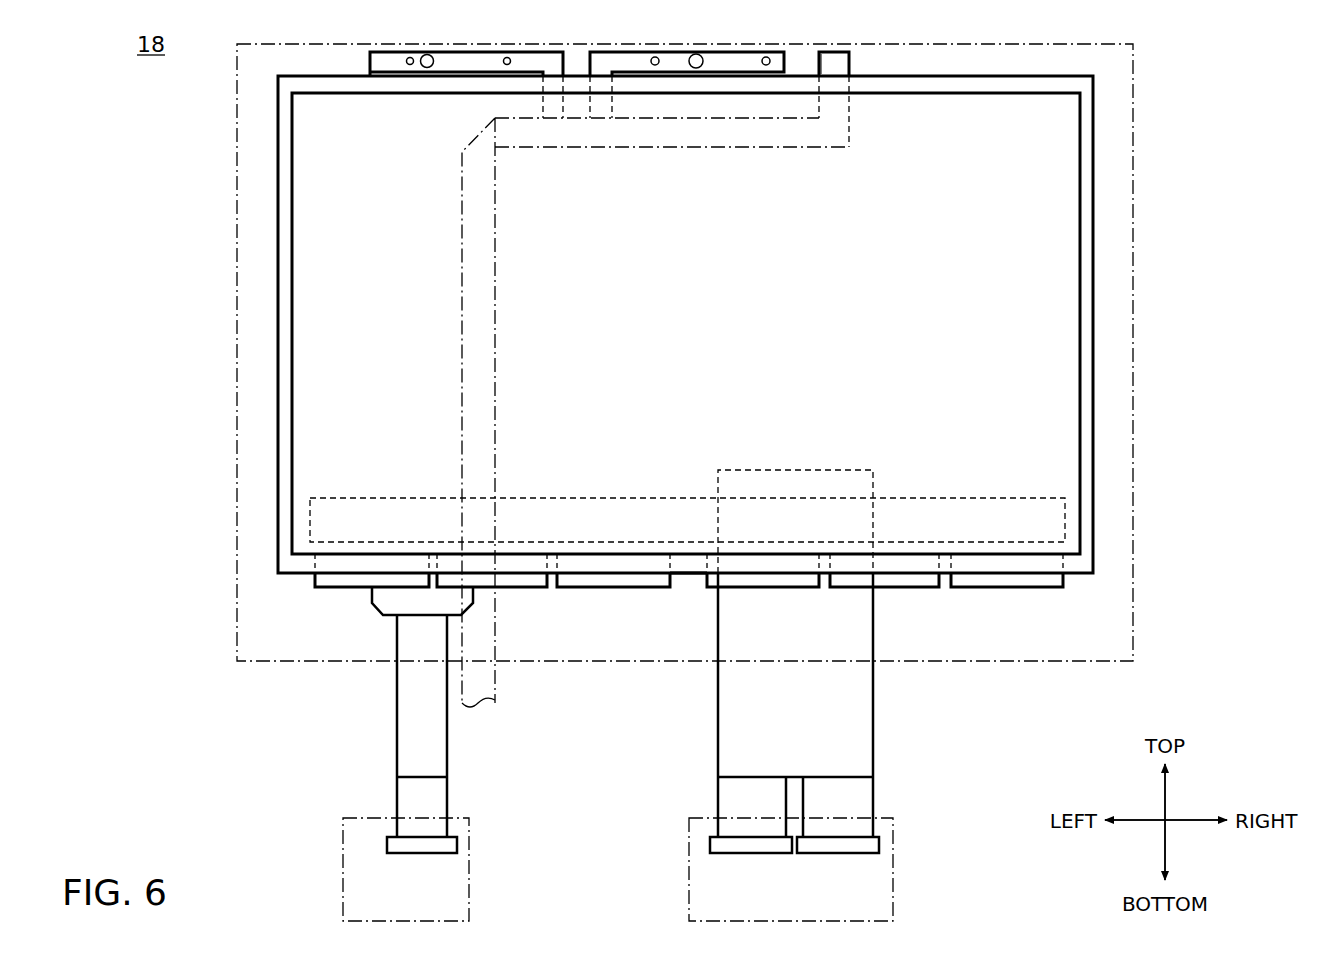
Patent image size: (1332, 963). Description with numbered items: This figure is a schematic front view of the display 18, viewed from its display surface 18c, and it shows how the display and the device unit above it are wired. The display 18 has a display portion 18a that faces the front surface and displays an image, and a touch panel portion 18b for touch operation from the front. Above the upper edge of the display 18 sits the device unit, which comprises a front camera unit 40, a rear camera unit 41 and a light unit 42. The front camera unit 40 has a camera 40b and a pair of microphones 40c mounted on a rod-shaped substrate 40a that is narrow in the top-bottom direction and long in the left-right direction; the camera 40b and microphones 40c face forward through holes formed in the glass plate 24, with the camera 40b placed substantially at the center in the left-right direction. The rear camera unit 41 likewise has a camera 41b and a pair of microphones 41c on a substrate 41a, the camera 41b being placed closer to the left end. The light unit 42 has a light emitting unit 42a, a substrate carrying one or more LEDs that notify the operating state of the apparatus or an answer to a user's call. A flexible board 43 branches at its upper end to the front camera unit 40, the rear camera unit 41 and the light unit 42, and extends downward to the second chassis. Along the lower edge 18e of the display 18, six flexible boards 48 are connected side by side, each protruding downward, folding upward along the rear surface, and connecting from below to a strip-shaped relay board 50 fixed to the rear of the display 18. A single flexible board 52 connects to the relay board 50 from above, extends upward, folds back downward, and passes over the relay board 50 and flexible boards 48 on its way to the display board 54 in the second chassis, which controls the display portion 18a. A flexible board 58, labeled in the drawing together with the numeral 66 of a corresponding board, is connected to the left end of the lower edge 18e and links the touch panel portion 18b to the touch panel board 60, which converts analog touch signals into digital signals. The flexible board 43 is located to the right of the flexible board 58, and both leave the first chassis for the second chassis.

The display 18 is at (748, 400).
The display portion 18a is at (748, 324).
The touch panel portion 18b is at (1095, 413).
The display surface 18c is at (1060, 143).
The lower edge 18e is at (683, 574).
The glass plate 24 is at (1036, 41).
The front camera unit 40 is at (698, 107).
The substrate 40a is at (722, 62).
The camera 40b is at (692, 50).
The microphones 40c is at (653, 51).
The rear camera unit 41 is at (449, 86).
The substrate 41a is at (459, 60).
The camera 41b is at (437, 53).
The microphones 41c is at (412, 50).
The light unit 42 is at (889, 77).
The light emitting unit 42a is at (840, 64).
The flexible board 43 is at (500, 284).
The flexible boards 48 is at (332, 588).
The relay board 50 is at (605, 498).
The flexible board 52 is at (836, 469).
The display board 54 is at (893, 860).
The flexible board 58 is at (372, 720).
The support leg 66 is at (405, 758).
The touch panel board 60 is at (343, 868).